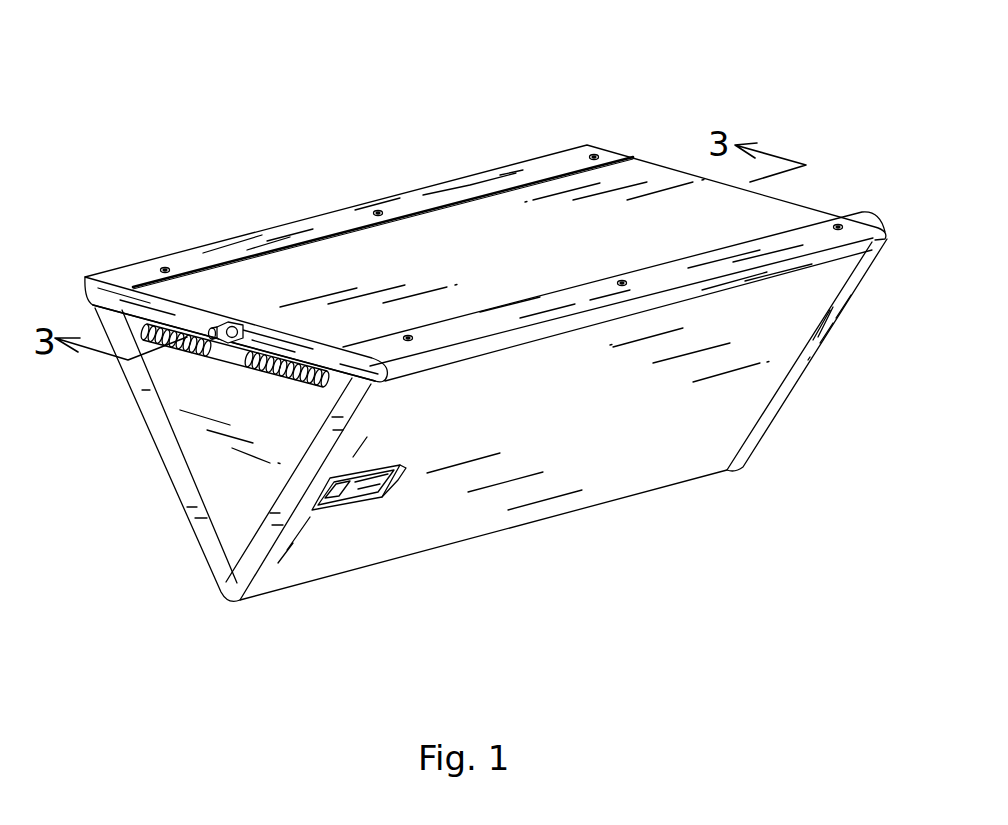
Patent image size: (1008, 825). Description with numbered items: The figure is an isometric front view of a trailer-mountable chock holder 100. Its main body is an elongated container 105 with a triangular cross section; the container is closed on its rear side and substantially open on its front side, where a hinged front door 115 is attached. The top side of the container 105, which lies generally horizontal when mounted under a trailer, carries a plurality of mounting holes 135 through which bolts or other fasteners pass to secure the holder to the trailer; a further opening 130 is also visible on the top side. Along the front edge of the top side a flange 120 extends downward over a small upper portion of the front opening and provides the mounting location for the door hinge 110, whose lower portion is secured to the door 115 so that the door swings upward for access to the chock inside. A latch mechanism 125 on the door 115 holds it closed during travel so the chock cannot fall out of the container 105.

The chock holder 100 is at (321, 90).
The container 105 is at (630, 427).
The door hinge 110 is at (166, 330).
The front door 115 is at (180, 382).
The flange 120 is at (197, 316).
The latch mechanism 125 is at (380, 483).
The fastener hole 130 is at (379, 210).
The mounting holes 135 is at (596, 155).